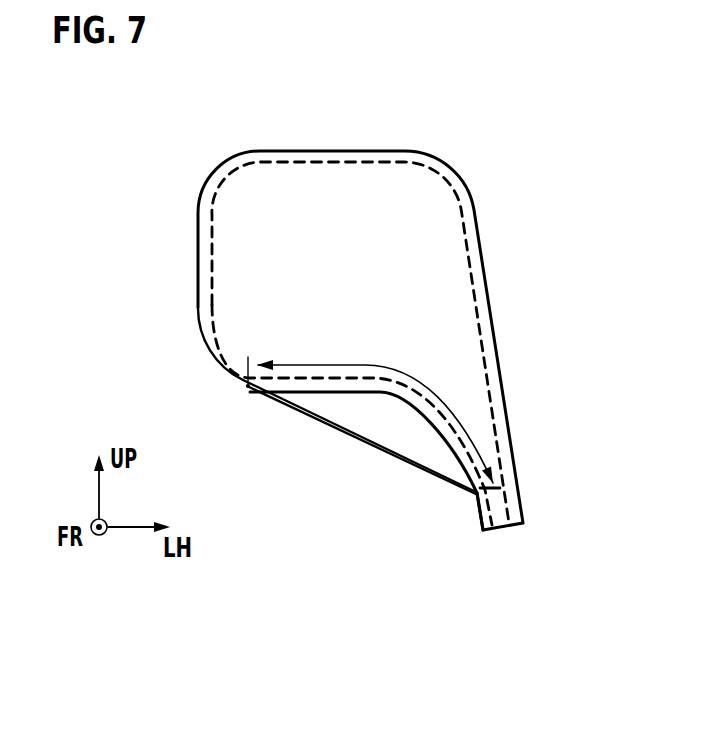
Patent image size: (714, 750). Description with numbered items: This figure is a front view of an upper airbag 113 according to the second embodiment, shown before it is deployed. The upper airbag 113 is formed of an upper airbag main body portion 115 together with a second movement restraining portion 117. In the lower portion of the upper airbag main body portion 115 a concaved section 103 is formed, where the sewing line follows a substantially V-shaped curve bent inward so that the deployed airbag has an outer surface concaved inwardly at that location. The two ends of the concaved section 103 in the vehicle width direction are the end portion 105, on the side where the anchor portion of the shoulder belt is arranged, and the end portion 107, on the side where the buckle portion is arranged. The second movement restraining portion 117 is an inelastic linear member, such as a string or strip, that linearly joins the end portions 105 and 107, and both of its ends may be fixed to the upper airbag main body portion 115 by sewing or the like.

The concaved section 103 is at (358, 363).
The end portion 105 is at (248, 386).
The end portion 107 is at (477, 508).
The upper airbag 113 is at (345, 141).
The upper airbag main body portion 115 is at (420, 248).
The second movement restraining portion 117 is at (353, 433).